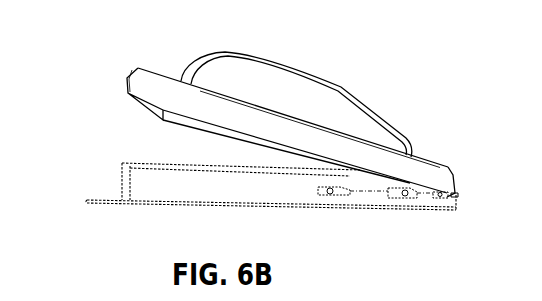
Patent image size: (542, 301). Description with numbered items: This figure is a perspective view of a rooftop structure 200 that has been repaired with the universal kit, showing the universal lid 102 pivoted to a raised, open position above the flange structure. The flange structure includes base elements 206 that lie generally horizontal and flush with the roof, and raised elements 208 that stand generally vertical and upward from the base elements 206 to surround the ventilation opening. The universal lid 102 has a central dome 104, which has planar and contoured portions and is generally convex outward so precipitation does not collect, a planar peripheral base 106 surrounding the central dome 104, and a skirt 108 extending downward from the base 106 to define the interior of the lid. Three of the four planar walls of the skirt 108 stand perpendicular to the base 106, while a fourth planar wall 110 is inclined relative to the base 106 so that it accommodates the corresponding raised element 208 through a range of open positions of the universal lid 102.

The universal lid 102 is at (310, 137).
The central dome 104 is at (283, 64).
The planar peripheral base 106 is at (157, 73).
The skirt 108 is at (130, 80).
The fourth planar wall 110 is at (458, 182).
The rooftop structure 200 is at (236, 134).
The base elements 206 is at (100, 196).
The raised elements 208 is at (121, 174).